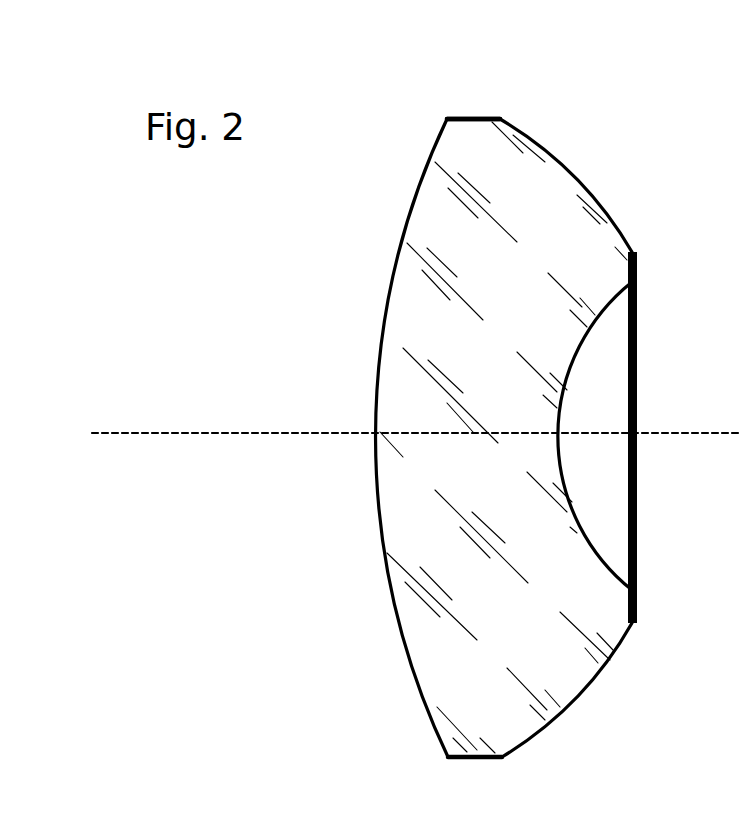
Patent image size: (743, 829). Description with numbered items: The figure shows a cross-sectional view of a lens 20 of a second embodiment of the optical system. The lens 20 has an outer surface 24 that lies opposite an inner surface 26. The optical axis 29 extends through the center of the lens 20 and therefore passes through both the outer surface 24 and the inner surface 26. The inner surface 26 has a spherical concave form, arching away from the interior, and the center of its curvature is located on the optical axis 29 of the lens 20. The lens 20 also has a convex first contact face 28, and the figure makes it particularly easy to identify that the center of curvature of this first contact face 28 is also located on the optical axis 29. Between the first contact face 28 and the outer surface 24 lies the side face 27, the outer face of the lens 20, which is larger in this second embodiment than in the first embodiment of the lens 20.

The lens 20 is at (593, 238).
The outer surface 24 is at (378, 383).
The inner surface 26 is at (563, 483).
The side face 27 is at (485, 118).
The first contact face 28 is at (612, 652).
The optical axis 29 is at (257, 433).